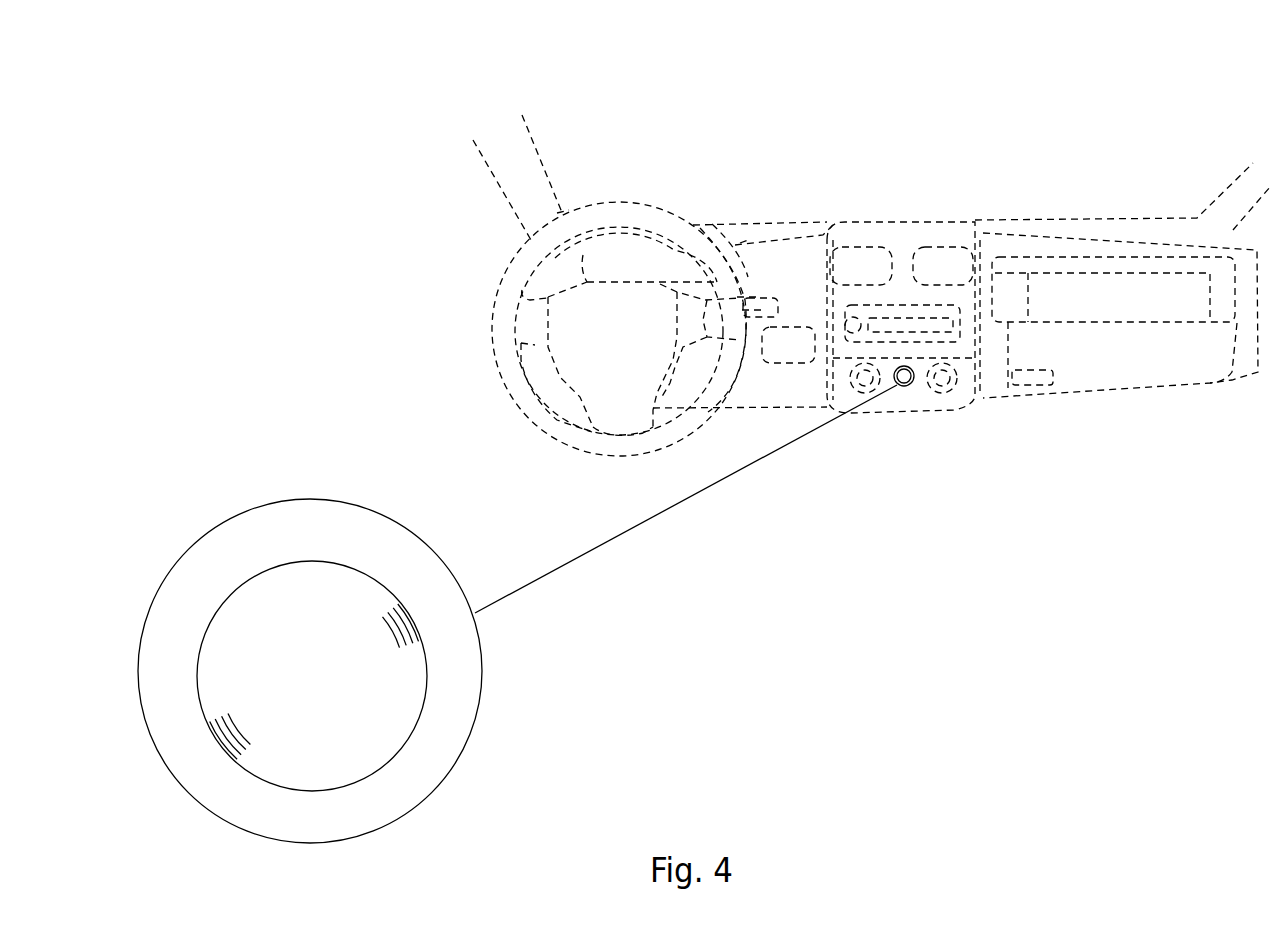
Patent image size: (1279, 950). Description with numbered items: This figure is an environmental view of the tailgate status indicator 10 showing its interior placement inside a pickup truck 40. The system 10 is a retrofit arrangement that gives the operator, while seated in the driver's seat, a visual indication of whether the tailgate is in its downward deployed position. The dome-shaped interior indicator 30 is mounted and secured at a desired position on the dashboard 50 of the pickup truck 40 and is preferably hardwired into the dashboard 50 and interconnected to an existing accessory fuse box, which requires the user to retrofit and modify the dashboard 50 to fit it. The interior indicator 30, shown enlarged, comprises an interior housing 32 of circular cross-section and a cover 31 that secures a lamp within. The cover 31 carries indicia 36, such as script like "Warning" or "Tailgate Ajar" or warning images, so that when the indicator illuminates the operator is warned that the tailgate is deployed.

The tailgate status indicator 10 is at (156, 123).
The interior indicator 30 is at (214, 466).
The cover 31 is at (308, 605).
The interior housing 32 is at (200, 567).
The indicia 36 is at (243, 673).
The pickup truck 40 is at (527, 180).
The dashboard 50 is at (848, 347).